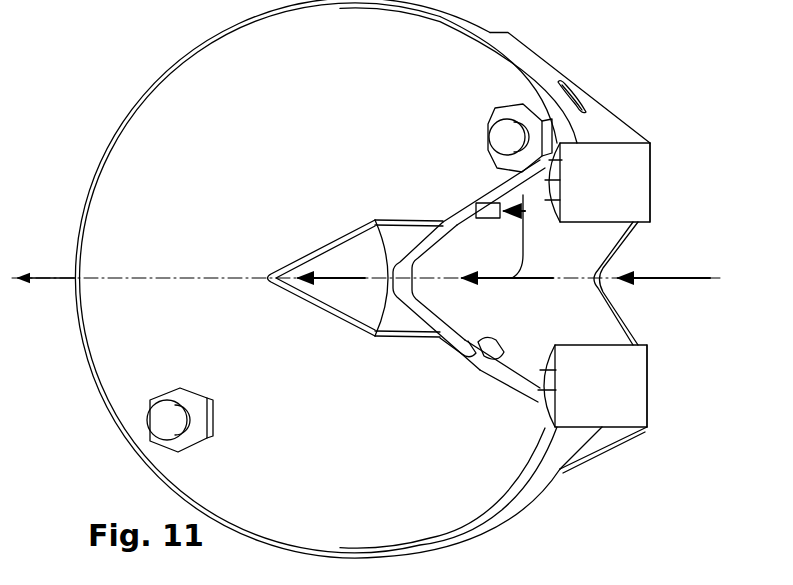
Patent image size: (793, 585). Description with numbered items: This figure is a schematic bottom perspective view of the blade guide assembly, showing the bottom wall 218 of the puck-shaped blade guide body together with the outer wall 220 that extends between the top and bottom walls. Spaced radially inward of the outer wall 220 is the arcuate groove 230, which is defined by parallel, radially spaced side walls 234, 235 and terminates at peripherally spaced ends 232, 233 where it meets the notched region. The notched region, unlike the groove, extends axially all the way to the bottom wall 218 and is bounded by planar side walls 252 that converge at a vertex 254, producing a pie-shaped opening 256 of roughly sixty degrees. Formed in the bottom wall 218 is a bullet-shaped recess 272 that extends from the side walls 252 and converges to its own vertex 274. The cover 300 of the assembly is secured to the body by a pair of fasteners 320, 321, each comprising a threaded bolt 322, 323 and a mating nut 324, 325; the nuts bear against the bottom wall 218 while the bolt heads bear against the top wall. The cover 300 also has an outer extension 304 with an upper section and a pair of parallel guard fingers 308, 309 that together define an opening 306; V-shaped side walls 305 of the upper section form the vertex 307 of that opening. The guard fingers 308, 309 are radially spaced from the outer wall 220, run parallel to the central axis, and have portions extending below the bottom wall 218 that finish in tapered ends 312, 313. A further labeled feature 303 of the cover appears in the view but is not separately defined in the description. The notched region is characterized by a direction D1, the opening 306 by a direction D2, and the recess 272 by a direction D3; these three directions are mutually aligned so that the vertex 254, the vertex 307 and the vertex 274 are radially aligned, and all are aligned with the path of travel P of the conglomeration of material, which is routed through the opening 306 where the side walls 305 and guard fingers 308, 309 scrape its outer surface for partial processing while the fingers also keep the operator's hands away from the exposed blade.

The bottom wall 218 is at (355, 498).
The outer wall 220 is at (100, 132).
The arcuate groove 230 is at (540, 238).
The end of arcuate groove 232 is at (548, 220).
The end of arcuate groove 233 is at (548, 352).
The side wall of arcuate groove 234 is at (462, 350).
The side wall of arcuate groove 235 is at (492, 372).
The planar side walls 252 is at (465, 222).
The vertex 254 is at (418, 278).
The pie-shaped opening 256 is at (495, 240).
The bullet-shaped recess 272 is at (335, 316).
The vertex 274 is at (290, 266).
The cover 300 is at (660, 185).
The V-shaped bracket 303 is at (449, 296).
The outer extension 304 is at (660, 208).
The V-shaped side walls 305 is at (630, 322).
The opening 306 is at (630, 262).
The vertex 307 is at (598, 281).
The guard finger 308 is at (598, 160).
The guard finger 309 is at (600, 395).
The tapered end 312 is at (530, 30).
The tapered end 313 is at (525, 402).
The fastener 320 is at (160, 445).
The fastener 321 is at (500, 112).
The threaded bolt 322 is at (160, 420).
The threaded bolt 323 is at (503, 137).
The nut 324 is at (190, 395).
The nut 325 is at (530, 105).
The direction of notched region D1 is at (505, 282).
The direction of opening D2 is at (645, 278).
The direction of recess D3 is at (315, 280).
The path of travel P is at (46, 284).